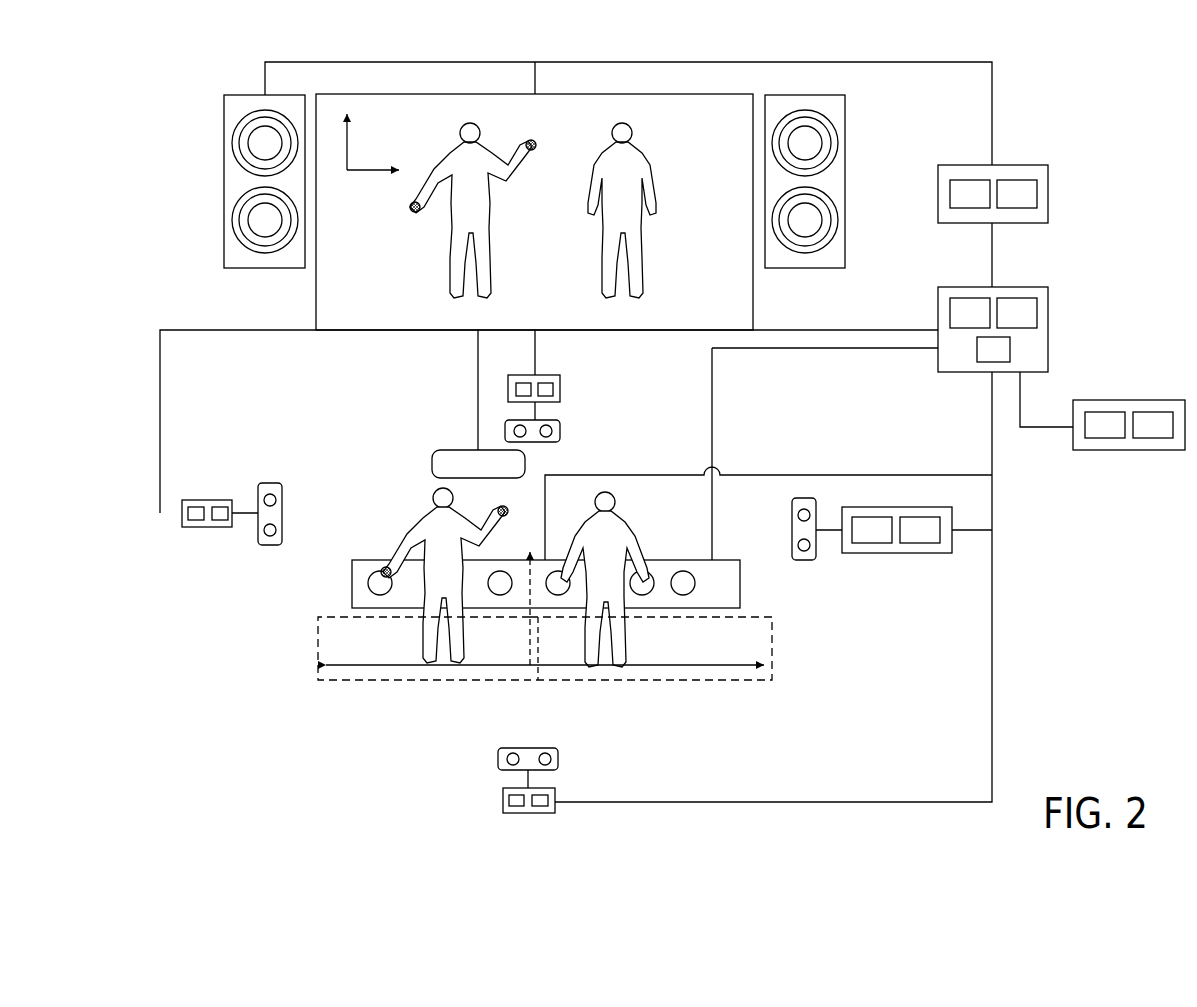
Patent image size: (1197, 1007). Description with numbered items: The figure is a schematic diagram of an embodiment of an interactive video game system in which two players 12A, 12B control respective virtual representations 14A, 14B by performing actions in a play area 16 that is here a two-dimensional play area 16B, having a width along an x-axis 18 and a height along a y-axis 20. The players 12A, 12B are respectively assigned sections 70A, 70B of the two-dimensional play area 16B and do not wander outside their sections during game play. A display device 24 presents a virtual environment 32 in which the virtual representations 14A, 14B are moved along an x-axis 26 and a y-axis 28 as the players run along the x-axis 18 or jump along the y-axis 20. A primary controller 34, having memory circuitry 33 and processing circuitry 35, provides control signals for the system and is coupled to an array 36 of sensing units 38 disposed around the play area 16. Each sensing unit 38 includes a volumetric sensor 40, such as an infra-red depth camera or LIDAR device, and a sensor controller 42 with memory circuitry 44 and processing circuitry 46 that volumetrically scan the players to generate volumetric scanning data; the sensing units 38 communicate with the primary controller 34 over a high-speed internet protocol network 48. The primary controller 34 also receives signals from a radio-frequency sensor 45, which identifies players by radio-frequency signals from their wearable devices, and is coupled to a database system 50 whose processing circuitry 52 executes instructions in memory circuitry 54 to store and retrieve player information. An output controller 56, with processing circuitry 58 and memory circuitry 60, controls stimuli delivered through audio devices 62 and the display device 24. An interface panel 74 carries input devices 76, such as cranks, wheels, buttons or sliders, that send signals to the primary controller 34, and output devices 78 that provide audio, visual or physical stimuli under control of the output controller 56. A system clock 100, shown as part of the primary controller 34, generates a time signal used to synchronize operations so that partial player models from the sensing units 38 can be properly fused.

The player 12A is at (405, 506).
The player 12B is at (634, 497).
The virtual representation 14A is at (500, 128).
The virtual representation 14B is at (574, 218).
The play area 16 is at (589, 649).
The 2D play area 16B is at (589, 649).
The x-axis 18 is at (475, 668).
The y-axis 20 is at (528, 635).
The display device 24 is at (729, 93).
The x-axis 26 is at (370, 173).
The y-axis 28 is at (349, 147).
The virtual environment 32 is at (674, 141).
The memory circuitry 33 is at (970, 298).
The primary controller 34 is at (1050, 333).
The processing circuitry 35 is at (1017, 298).
The array 36 is at (297, 390).
The sensing unit 38 is at (150, 530).
The volumetric sensor 40 is at (283, 512).
The sensor controller 42 is at (205, 500).
The memory circuitry 44 is at (198, 527).
The radio-frequency sensor 45 is at (432, 466).
The processing circuitry 46 is at (222, 527).
The high-speed internet protocol network 48 is at (993, 586).
The database system 50 is at (1128, 450).
The processing circuitry 52 is at (1155, 412).
The memory circuitry 54 is at (1107, 412).
The output controller 56 is at (1050, 200).
The processing circuitry 58 is at (1017, 180).
The memory circuitry 60 is at (970, 180).
The audio device 62 is at (222, 183).
The section 70A is at (369, 677).
The section 70B is at (641, 677).
The interface panel 74 is at (741, 585).
The input device 76 is at (372, 578).
The output device 78 is at (556, 572).
The system clock 100 is at (977, 350).